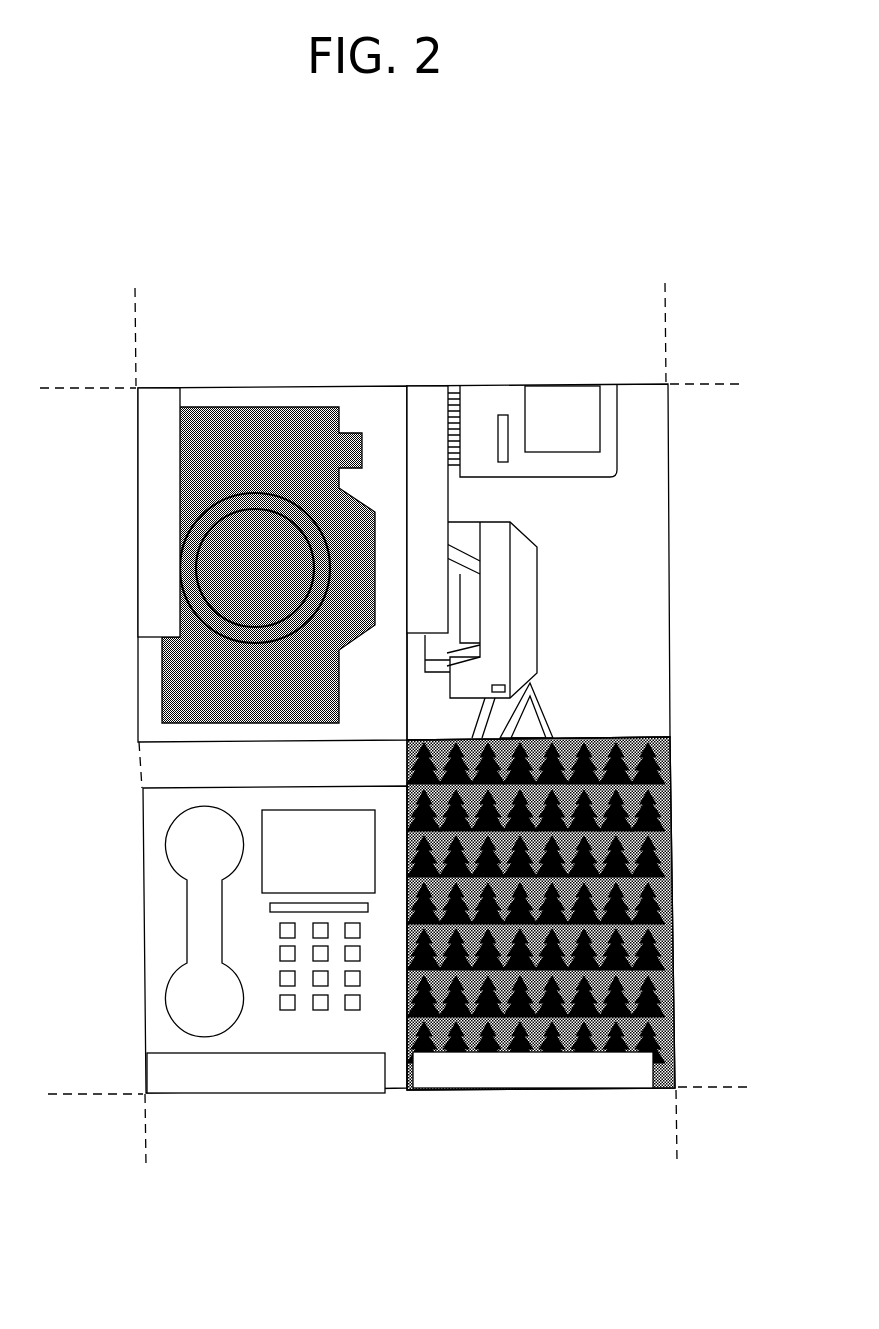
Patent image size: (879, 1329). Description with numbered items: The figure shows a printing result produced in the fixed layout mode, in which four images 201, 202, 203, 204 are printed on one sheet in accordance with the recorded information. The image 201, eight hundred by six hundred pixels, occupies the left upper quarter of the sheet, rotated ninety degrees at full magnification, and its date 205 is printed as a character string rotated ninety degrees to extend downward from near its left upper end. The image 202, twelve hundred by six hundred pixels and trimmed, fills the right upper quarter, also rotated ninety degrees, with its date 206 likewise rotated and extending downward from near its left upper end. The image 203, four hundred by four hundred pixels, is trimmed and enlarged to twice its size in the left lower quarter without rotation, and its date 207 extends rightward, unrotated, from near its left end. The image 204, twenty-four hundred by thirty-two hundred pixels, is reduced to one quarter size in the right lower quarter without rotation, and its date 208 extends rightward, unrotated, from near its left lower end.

The image 201 is at (138, 682).
The image 202 is at (670, 618).
The image 203 is at (143, 937).
The image 204 is at (672, 912).
The date 205 is at (171, 388).
The date 206 is at (437, 386).
The date 207 is at (188, 1094).
The date 208 is at (443, 1088).